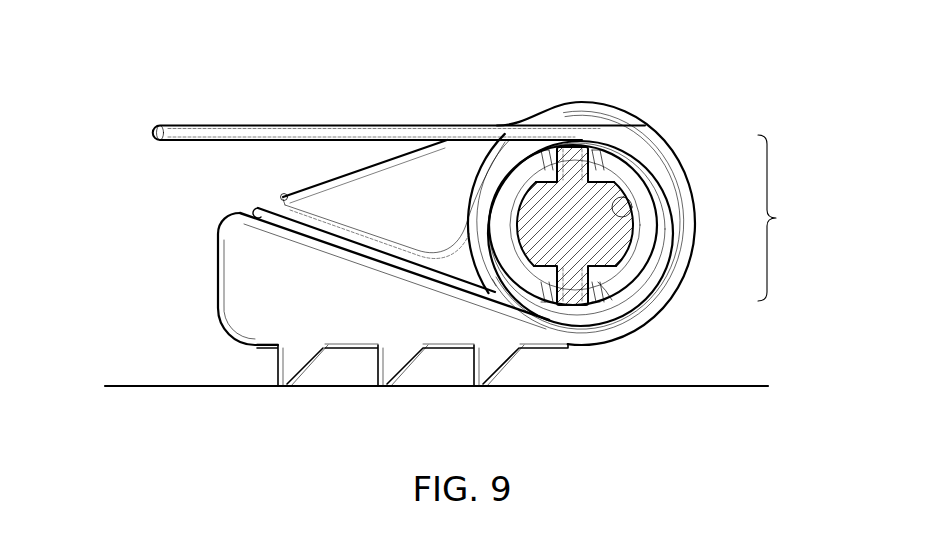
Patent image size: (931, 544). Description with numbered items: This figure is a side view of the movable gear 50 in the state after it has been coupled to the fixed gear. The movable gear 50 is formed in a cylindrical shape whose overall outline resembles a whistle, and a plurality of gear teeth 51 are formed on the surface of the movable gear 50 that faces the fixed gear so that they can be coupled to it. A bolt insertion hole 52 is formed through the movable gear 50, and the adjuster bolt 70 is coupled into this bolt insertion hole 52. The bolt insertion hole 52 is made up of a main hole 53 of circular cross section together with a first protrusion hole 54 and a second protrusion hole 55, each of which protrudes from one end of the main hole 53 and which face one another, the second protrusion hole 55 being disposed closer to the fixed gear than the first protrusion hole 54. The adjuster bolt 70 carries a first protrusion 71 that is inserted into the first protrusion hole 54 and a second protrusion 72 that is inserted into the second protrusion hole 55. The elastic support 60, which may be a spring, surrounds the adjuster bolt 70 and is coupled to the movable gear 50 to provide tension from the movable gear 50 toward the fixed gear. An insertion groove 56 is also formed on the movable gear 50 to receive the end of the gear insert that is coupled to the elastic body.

The movable gear 50 is at (647, 95).
The gear teeth 51 is at (294, 357).
The bolt insertion hole 52 is at (783, 218).
The main hole 53 is at (632, 198).
The first protrusion hole 54 is at (612, 147).
The second protrusion hole 55 is at (616, 297).
The insertion groove 56 is at (520, 153).
The elastic support 60 is at (268, 125).
The adjuster bolt 70 is at (518, 266).
The first protrusion 71 is at (569, 146).
The second protrusion 72 is at (565, 306).